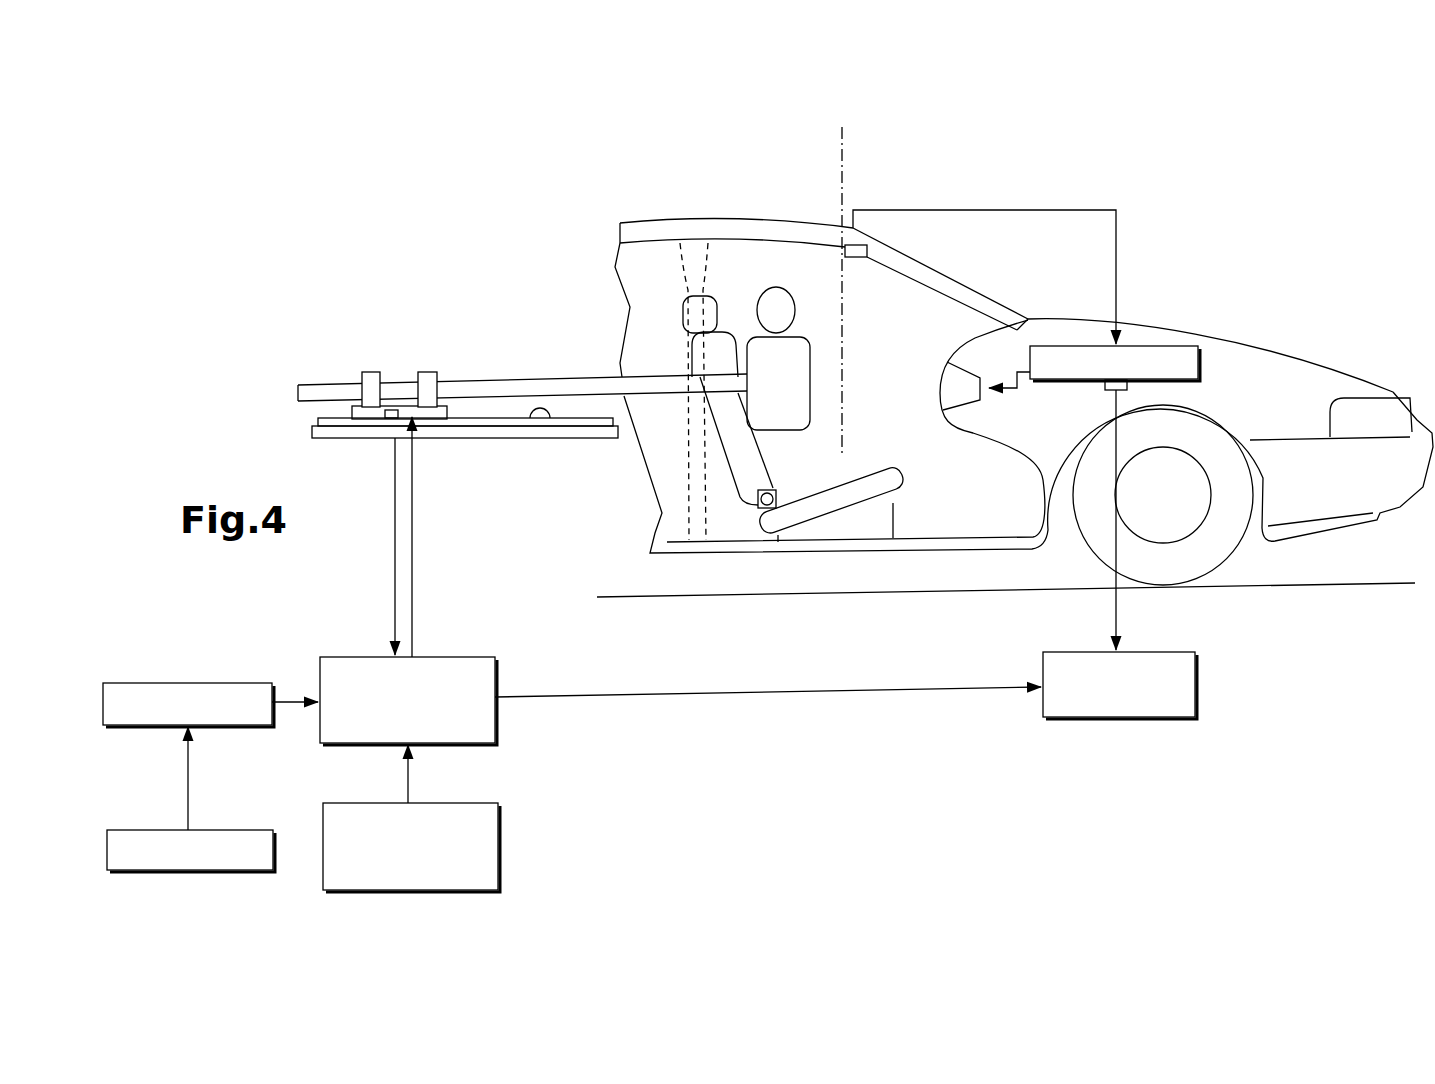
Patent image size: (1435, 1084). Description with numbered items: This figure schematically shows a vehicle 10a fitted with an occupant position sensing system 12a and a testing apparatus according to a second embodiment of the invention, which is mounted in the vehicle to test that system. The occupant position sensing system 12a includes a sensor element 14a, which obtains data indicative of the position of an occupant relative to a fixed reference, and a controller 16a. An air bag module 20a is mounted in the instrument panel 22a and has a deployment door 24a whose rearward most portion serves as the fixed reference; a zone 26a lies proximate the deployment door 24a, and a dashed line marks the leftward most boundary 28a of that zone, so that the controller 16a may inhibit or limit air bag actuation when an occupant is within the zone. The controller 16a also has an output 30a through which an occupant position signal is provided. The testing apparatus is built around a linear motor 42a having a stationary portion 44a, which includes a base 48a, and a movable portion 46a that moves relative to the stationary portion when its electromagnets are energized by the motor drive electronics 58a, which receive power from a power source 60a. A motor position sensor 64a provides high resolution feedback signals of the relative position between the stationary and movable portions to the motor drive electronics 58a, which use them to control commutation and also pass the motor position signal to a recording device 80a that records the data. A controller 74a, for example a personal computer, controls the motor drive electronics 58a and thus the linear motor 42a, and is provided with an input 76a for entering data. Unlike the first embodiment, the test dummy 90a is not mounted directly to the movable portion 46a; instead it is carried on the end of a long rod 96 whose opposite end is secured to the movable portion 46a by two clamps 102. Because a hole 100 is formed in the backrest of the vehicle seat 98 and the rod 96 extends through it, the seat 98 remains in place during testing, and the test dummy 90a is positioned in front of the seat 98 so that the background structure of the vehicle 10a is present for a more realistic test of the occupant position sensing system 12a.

The vehicle 10a is at (1293, 350).
The occupant position sensing system 12a is at (1162, 207).
The sensor element 14a is at (869, 250).
The controller 16a is at (1194, 350).
The air bag module 20a is at (962, 390).
The instrument panel 22a is at (980, 328).
The deployment door 24a is at (945, 382).
The zone 26a is at (884, 302).
The leftward most boundary 28a is at (840, 142).
The output 30a is at (1107, 384).
The linear motor 42a is at (463, 479).
The stationary portion 44a is at (540, 418).
The movable portion 46a is at (440, 412).
The base 48a is at (490, 430).
The motor drive electronics 58a is at (480, 665).
The power source 60a is at (480, 826).
The motor position sensor 64a is at (389, 415).
The controller 74a is at (248, 685).
The input 76a is at (250, 838).
The recording device 80a is at (1185, 700).
The test dummy 90a is at (771, 298).
The rod 96 is at (547, 385).
The vehicle seat 98 is at (833, 502).
The hole 100 is at (696, 400).
The clamps 102 is at (425, 374).